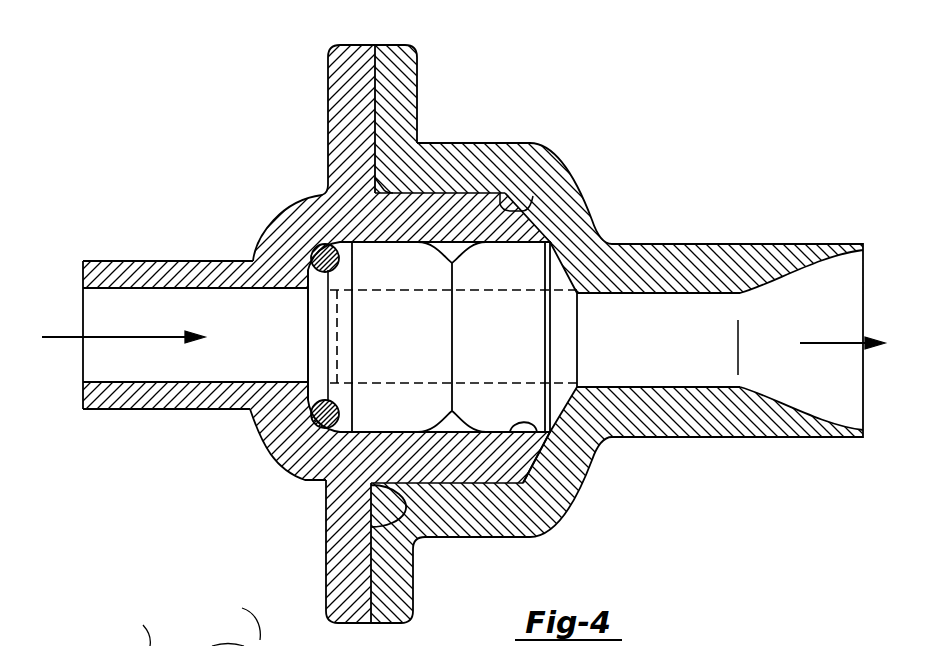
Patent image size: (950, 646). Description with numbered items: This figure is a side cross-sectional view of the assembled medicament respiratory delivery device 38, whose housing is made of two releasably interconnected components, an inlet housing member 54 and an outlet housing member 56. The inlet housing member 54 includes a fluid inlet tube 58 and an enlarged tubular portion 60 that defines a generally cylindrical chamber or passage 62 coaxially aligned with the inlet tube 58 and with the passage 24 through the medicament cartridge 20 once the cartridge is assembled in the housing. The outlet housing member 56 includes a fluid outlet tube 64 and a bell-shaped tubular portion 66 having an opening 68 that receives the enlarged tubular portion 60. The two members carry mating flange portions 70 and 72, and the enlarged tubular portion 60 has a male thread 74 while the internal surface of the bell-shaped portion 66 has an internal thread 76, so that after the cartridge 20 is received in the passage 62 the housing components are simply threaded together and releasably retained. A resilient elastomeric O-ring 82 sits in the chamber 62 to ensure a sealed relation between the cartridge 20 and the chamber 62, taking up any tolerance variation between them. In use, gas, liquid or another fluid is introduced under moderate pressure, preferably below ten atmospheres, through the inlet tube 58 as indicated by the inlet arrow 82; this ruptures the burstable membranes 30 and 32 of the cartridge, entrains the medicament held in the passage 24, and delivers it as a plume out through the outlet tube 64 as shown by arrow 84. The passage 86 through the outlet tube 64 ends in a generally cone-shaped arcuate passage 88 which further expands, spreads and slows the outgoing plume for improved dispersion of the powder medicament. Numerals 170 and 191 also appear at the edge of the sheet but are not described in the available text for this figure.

The medicament cartridge 20 is at (512, 333).
The passage 24 is at (372, 292).
The burstable membrane 30 is at (333, 302).
The burstable membrane 32 is at (578, 366).
The medicament respiratory delivery device 38 is at (579, 104).
The inlet housing member 54 is at (268, 188).
The outlet housing member 56 is at (616, 212).
The fluid inlet tube 58 is at (216, 410).
The enlarged tubular portion 60 is at (440, 537).
The cylindrical chamber or passage 62 is at (573, 478).
The fluid outlet tube 64 is at (760, 243).
The bell-shaped tubular portion 66 is at (450, 148).
The opening 68 is at (512, 207).
The flange portion 70 is at (348, 50).
The flange portion 72 is at (394, 50).
The male thread 74 is at (405, 514).
The internal thread 76 is at (410, 190).
The O-ring 82 is at (67, 330).
The arrow 84 is at (847, 345).
The passage 86 is at (717, 373).
The cone-shaped arcuate passage 88 is at (833, 405).
The element of adjacent figure 170 is at (234, 617).
The element of adjacent figure 191 is at (133, 626).